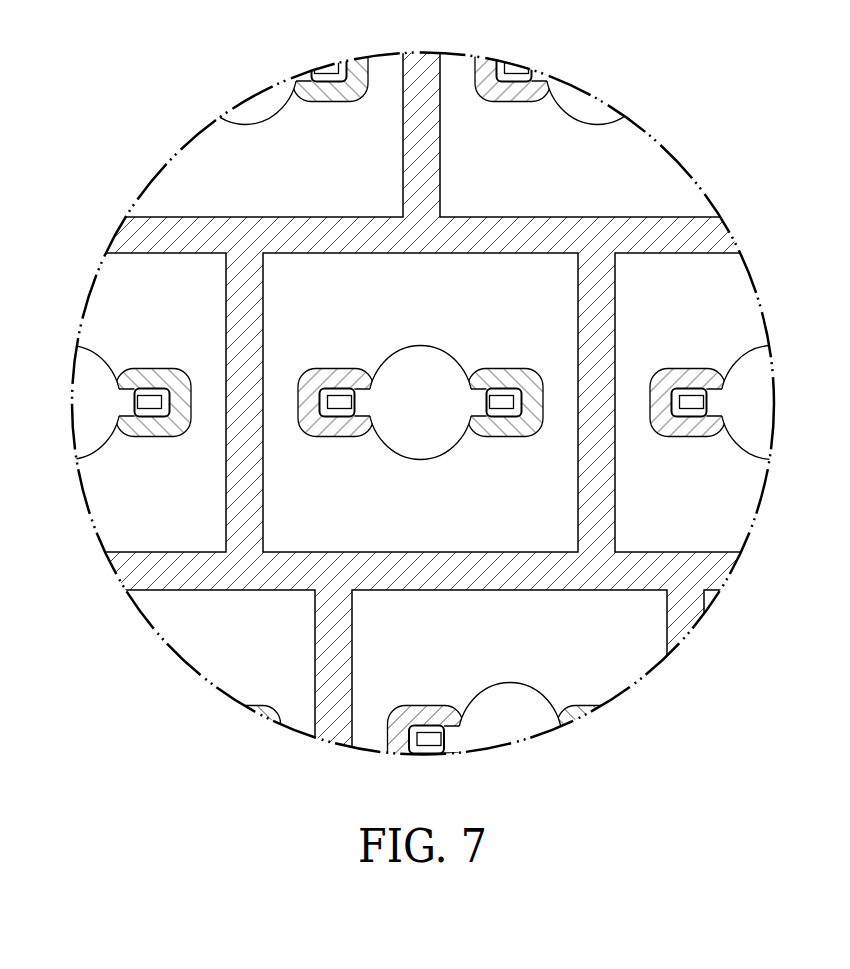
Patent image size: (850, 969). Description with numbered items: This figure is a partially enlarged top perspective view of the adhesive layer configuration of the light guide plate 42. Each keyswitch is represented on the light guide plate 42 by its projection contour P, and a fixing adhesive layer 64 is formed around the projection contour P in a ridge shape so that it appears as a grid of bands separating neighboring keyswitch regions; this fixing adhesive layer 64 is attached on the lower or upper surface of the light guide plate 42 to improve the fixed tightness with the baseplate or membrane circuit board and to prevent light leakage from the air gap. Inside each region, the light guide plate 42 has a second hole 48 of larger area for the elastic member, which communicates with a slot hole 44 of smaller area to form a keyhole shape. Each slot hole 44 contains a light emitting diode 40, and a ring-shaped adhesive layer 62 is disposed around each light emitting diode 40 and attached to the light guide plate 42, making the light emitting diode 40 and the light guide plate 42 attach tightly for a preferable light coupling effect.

The light guide plate 42 is at (176, 138).
The fixing adhesive layer 64 is at (143, 242).
The projection contour P is at (564, 252).
The second hole 48 is at (421, 345).
The ring-shaped adhesive layer 62 is at (313, 380).
The slot hole 44 is at (339, 389).
The light emitting diode 40 is at (338, 409).